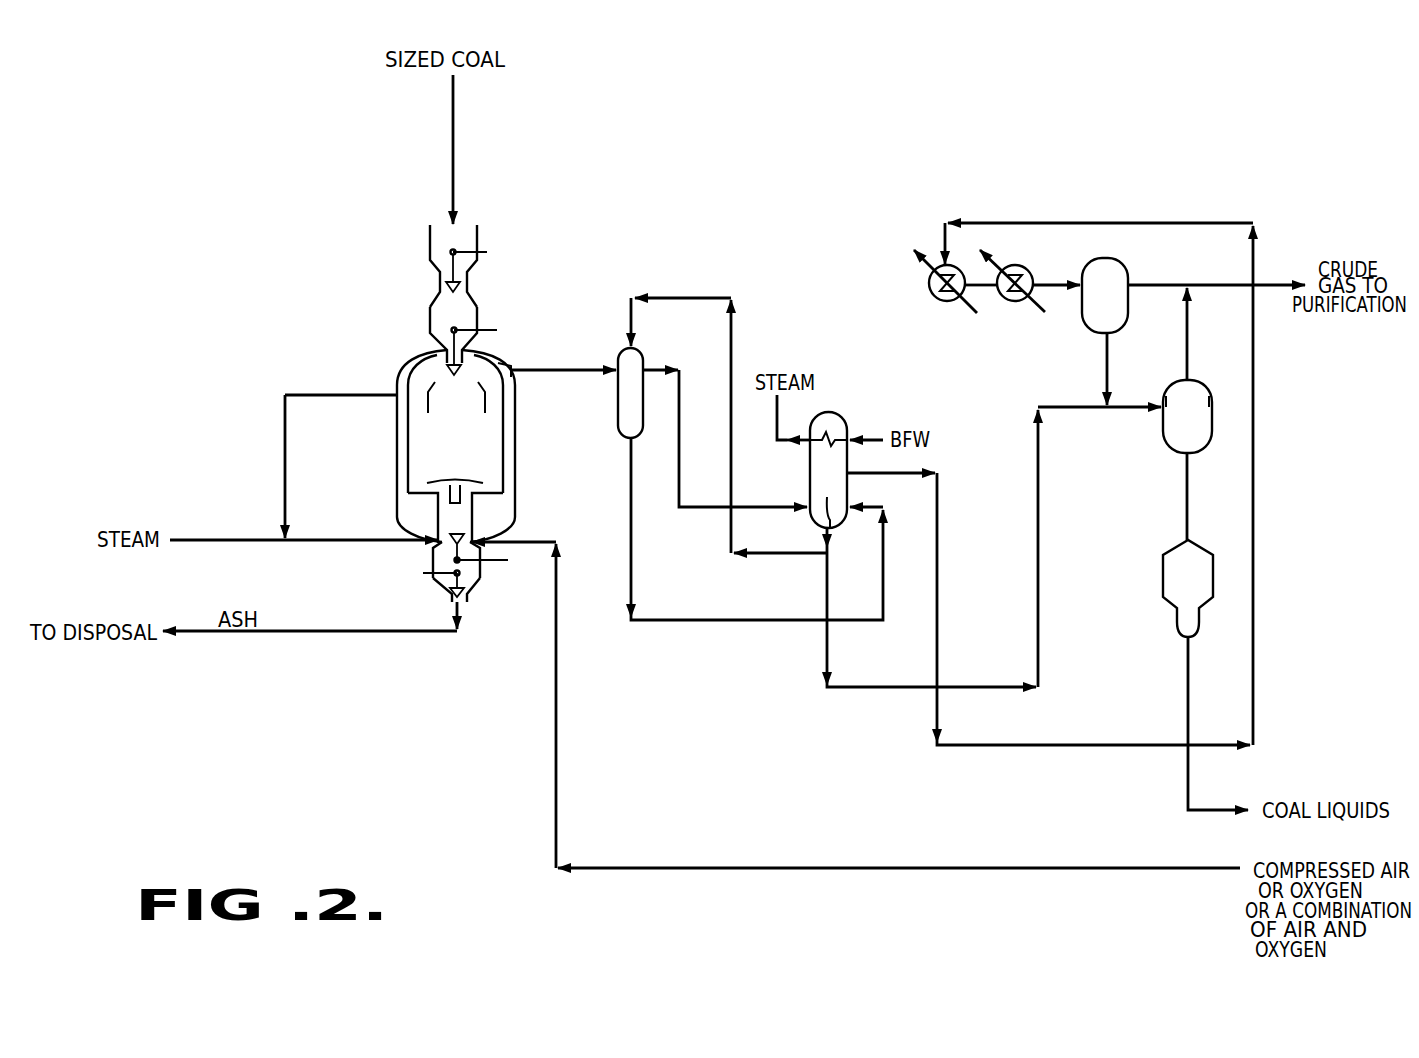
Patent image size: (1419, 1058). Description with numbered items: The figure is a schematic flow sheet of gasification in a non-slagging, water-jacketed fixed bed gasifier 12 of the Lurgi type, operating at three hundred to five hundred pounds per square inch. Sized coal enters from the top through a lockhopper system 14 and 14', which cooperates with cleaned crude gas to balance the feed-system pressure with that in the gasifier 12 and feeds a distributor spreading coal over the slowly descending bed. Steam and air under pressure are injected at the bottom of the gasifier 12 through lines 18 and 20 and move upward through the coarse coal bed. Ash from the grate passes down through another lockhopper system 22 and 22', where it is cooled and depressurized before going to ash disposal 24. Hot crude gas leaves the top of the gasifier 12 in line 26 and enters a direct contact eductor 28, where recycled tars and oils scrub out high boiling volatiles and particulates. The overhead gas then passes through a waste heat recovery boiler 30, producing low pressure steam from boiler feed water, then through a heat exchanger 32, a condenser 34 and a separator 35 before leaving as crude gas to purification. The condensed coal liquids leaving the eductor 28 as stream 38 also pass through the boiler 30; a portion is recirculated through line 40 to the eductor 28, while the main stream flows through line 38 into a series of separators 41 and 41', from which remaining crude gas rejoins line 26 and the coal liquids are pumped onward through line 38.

The gasifier 12 is at (515, 475).
The lockhopper system 14 is at (433, 266).
The lockhopper system 14' is at (436, 336).
The line 18 is at (317, 540).
The line 20 is at (556, 548).
The lockhopper system 22 is at (503, 536).
The lockhopper system 22' is at (483, 591).
The ash disposal 24 is at (363, 632).
The line 26 is at (542, 370).
The direct contact eductor 28 is at (643, 362).
The waste heat recovery boiler 30 is at (810, 473).
The heat exchanger 32 is at (931, 292).
The condenser 34 is at (1028, 300).
The separator 35 is at (1128, 272).
The line 38 is at (633, 585).
The line 40 is at (792, 555).
The separator 41 is at (1165, 419).
The separator 41' is at (1170, 578).